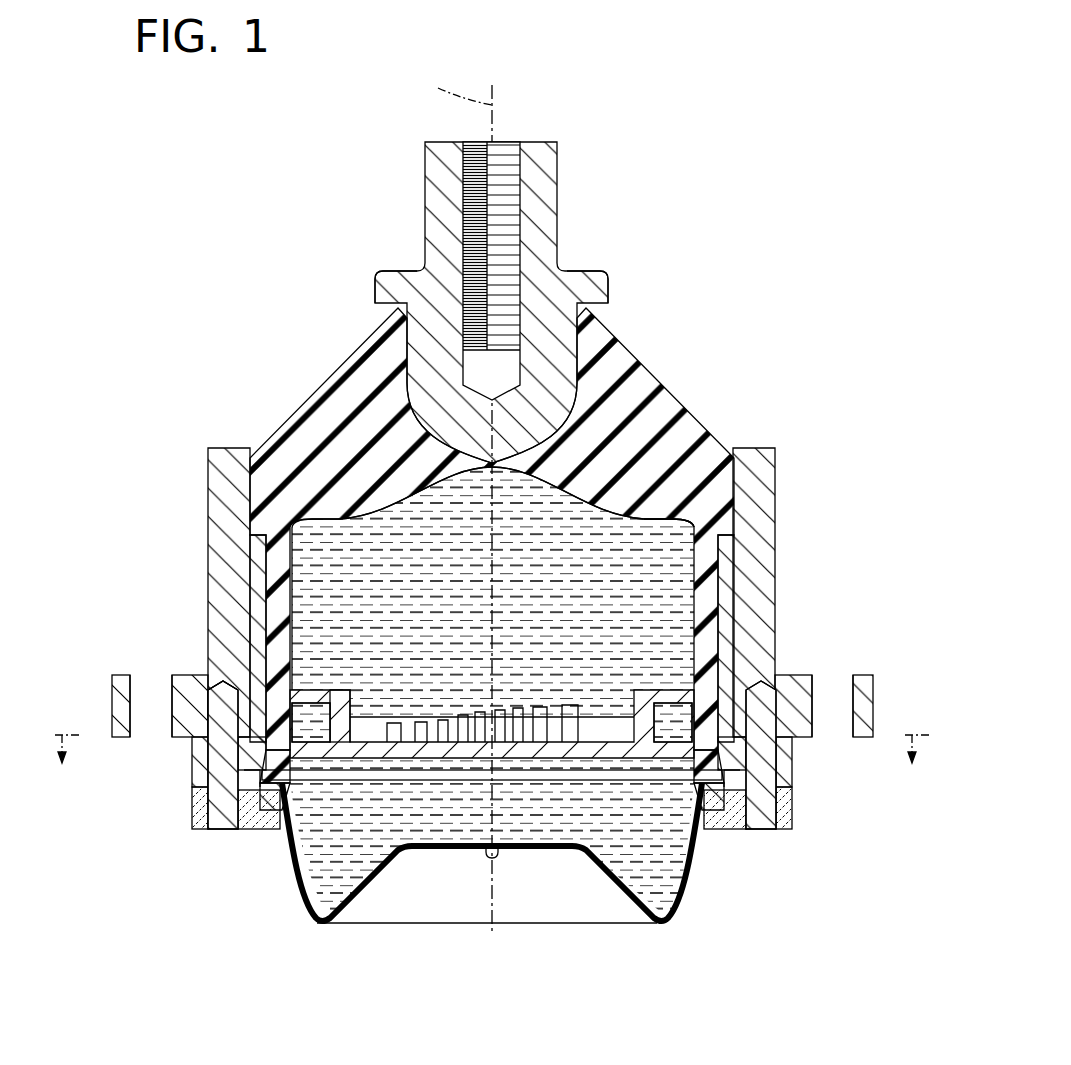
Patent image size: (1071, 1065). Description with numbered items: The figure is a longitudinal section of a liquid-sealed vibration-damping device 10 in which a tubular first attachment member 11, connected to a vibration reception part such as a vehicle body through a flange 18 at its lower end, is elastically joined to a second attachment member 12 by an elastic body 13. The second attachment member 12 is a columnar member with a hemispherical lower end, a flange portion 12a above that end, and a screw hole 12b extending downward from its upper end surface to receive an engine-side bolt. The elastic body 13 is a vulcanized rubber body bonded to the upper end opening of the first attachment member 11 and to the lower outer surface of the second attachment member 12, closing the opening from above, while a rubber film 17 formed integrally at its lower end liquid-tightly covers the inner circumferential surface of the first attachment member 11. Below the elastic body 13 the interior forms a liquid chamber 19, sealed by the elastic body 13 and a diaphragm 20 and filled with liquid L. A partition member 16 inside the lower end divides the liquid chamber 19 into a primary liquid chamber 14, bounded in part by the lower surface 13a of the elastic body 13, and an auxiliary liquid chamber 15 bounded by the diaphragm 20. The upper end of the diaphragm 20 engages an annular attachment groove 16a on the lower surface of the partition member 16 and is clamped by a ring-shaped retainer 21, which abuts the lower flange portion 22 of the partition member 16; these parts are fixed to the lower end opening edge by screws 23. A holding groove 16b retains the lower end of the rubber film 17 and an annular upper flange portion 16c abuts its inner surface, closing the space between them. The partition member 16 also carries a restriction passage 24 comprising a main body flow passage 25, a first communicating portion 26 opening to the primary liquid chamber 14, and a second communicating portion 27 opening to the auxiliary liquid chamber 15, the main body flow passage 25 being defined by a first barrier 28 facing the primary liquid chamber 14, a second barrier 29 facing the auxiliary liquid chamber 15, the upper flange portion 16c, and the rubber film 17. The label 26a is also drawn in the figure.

The vibration-damping device 10 is at (748, 138).
The first attachment member 11 is at (790, 657).
The second attachment member 12 is at (542, 302).
The flange portion 12a is at (602, 285).
The screw hole 12b is at (512, 224).
The elastic body 13 is at (506, 529).
The lower surface 13a is at (586, 510).
The primary liquid chamber 14 is at (462, 589).
The auxiliary liquid chamber 15 is at (410, 797).
The partition member 16 is at (273, 612).
The attachment groove 16a is at (262, 797).
The holding groove 16b is at (210, 687).
The upper flange portion 16c is at (300, 697).
The rubber film 17 is at (262, 610).
The flange 18 is at (130, 705).
The liquid chamber 19 is at (340, 571).
The diaphragm 20 is at (456, 852).
The retainer 21 is at (192, 822).
The lower flange portion 22 is at (195, 756).
The screws 23 is at (220, 797).
The restriction passage 24 is at (659, 697).
The main body flow passage 25 is at (572, 540).
The first communicating portion 26 is at (492, 811).
The protrusion of membrane 26a is at (572, 706).
The second communicating portion 27 is at (320, 764).
The first barrier 28 is at (343, 683).
The second barrier 29 is at (382, 760).
The liquid L is at (672, 552).